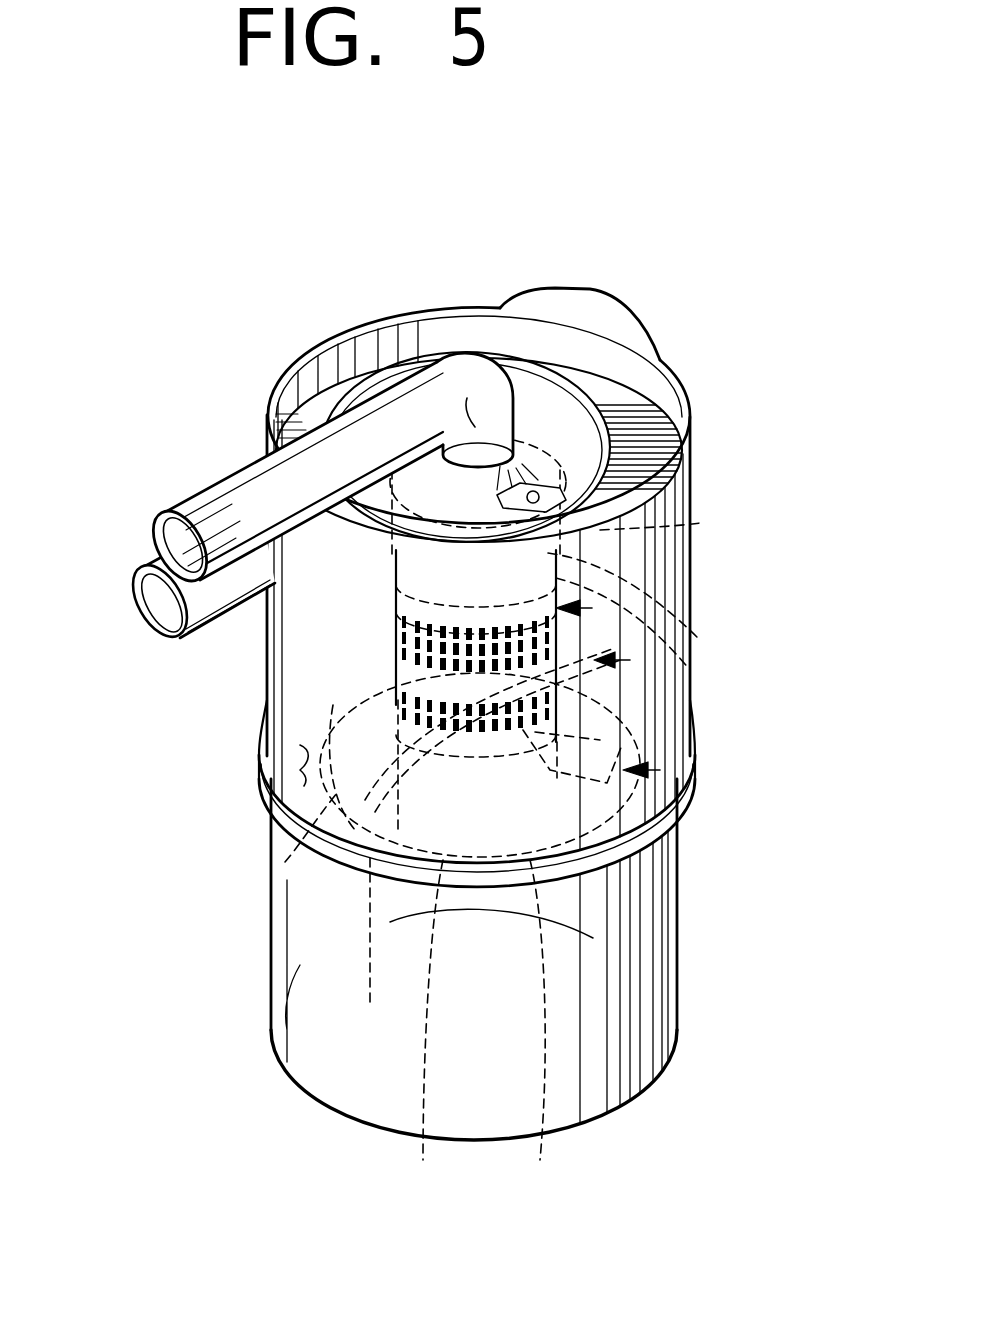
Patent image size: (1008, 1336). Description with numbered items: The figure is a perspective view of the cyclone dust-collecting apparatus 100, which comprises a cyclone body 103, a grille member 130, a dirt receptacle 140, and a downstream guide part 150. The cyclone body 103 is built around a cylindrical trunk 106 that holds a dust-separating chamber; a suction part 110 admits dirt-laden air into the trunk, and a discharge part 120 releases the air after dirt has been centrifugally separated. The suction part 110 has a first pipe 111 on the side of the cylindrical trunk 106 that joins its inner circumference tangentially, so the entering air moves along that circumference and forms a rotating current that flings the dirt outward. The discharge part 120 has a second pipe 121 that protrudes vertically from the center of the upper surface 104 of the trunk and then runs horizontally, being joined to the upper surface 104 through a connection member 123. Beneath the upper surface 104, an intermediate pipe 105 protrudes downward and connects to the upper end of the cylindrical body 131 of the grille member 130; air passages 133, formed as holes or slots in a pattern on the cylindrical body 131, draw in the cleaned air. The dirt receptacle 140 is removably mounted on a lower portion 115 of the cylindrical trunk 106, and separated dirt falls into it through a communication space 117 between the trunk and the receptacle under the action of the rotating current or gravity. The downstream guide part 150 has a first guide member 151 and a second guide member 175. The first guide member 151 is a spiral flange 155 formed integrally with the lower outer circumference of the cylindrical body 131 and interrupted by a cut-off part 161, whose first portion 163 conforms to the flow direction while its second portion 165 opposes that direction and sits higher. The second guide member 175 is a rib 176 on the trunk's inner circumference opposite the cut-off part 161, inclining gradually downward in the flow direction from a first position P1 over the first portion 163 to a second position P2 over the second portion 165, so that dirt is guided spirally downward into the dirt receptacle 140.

The cyclone dust-collecting apparatus 100 is at (200, 299).
The cyclone body 103 is at (262, 661).
The upper surface 104 is at (622, 408).
The intermediate pipe 105 is at (698, 523).
The cylindrical trunk 106 is at (262, 700).
The suction part 110 is at (136, 595).
The first pipe 111 is at (153, 567).
The lower portion 115 is at (270, 817).
The communication space 117 is at (258, 768).
The discharge part 120 is at (357, 413).
The second pipe 121 is at (237, 497).
The connection member 123 is at (516, 425).
The grille member 130 is at (580, 612).
The cylindrical body 131 is at (560, 580).
The air passages 133 is at (686, 712).
The dirt receptacle 140 is at (633, 960).
The downstream guide part 150 is at (607, 705).
The first guide member 151 is at (813, 703).
The spiral flange 155 is at (690, 766).
The cut-off part 161 is at (466, 1062).
The first portion 163 is at (537, 1036).
The second portion 165 is at (410, 1035).
The second guide member 175 is at (695, 676).
The rib 176 is at (469, 976).
The first position P1 is at (688, 632).
The second position P2 is at (285, 862).